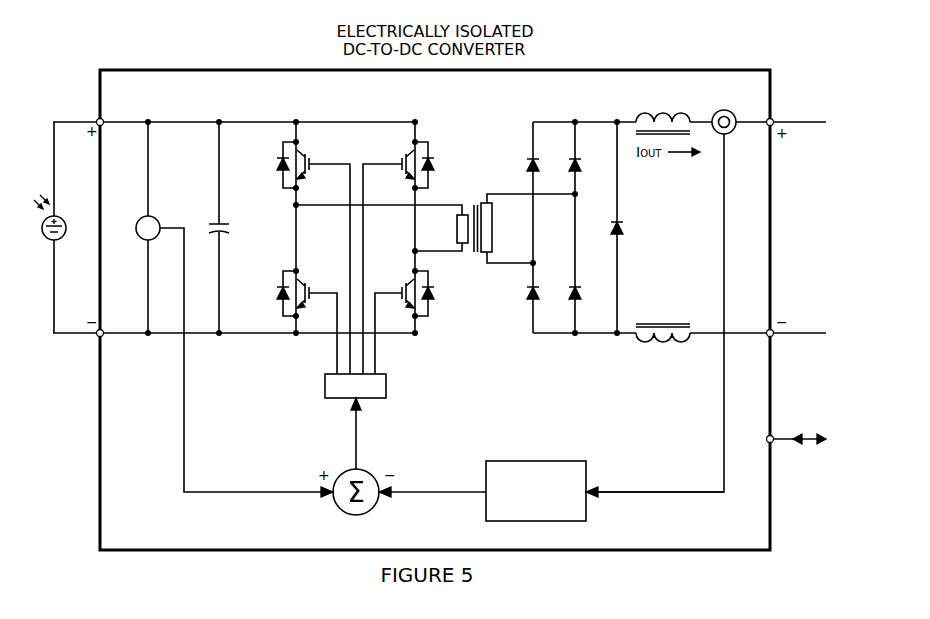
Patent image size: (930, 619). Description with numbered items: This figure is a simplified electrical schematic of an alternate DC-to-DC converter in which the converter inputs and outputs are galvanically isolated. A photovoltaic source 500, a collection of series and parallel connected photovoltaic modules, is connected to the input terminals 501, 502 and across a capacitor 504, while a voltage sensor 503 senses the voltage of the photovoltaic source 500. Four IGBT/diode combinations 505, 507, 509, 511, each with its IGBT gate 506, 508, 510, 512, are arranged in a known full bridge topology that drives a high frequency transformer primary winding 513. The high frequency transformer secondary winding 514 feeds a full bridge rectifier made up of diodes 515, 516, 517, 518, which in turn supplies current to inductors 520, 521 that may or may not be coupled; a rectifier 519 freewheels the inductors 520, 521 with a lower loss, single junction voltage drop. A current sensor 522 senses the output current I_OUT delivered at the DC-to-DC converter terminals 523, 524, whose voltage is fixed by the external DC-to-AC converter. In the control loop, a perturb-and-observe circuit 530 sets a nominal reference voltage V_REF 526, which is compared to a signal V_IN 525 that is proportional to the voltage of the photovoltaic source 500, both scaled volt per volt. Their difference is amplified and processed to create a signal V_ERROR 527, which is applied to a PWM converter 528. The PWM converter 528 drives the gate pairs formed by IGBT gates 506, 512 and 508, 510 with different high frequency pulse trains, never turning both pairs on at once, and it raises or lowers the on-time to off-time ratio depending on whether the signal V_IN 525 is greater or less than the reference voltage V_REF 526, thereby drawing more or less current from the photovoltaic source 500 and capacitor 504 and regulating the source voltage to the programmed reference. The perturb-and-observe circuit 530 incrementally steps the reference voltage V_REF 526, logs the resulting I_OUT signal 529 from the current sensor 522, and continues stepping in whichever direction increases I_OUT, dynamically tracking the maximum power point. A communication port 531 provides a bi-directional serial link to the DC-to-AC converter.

The photovoltaic source 500 is at (46, 245).
The input terminal 501 is at (96, 117).
The input terminal 502 is at (96, 338).
The voltage sensor 503 is at (162, 217).
The capacitor 504 is at (225, 217).
The IGBT/diode combination 505 is at (272, 157).
The IGBT gate 506 is at (314, 157).
The IGBT/diode combination 507 is at (440, 157).
The IGBT gate 508 is at (397, 157).
The IGBT/diode combination 509 is at (272, 285).
The IGBT gate 510 is at (314, 285).
The IGBT/diode combination 511 is at (440, 285).
The IGBT gate 512 is at (397, 285).
The high frequency transformer primary winding 513 is at (451, 236).
The high frequency transformer secondary winding 514 is at (497, 226).
The diode 515 is at (539, 166).
The diode 516 is at (581, 166).
The diode 517 is at (527, 295).
The diode 518 is at (566, 295).
The rectifier 519 is at (608, 231).
The inductor 520 is at (653, 108).
The inductor 521 is at (653, 318).
The current sensor 522 is at (725, 108).
The DC-to-DC converter terminal 523 is at (775, 117).
The DC-to-DC converter terminal 524 is at (775, 338).
The signal V_IN 525 is at (310, 495).
The reference voltage V_REF 526 is at (398, 495).
The signal V_ERROR 527 is at (358, 413).
The PWM converter 528 is at (385, 372).
The I_OUT signal 529 is at (601, 488).
The perturb-and-observe circuit 530 is at (533, 458).
The communication port 531 is at (775, 445).